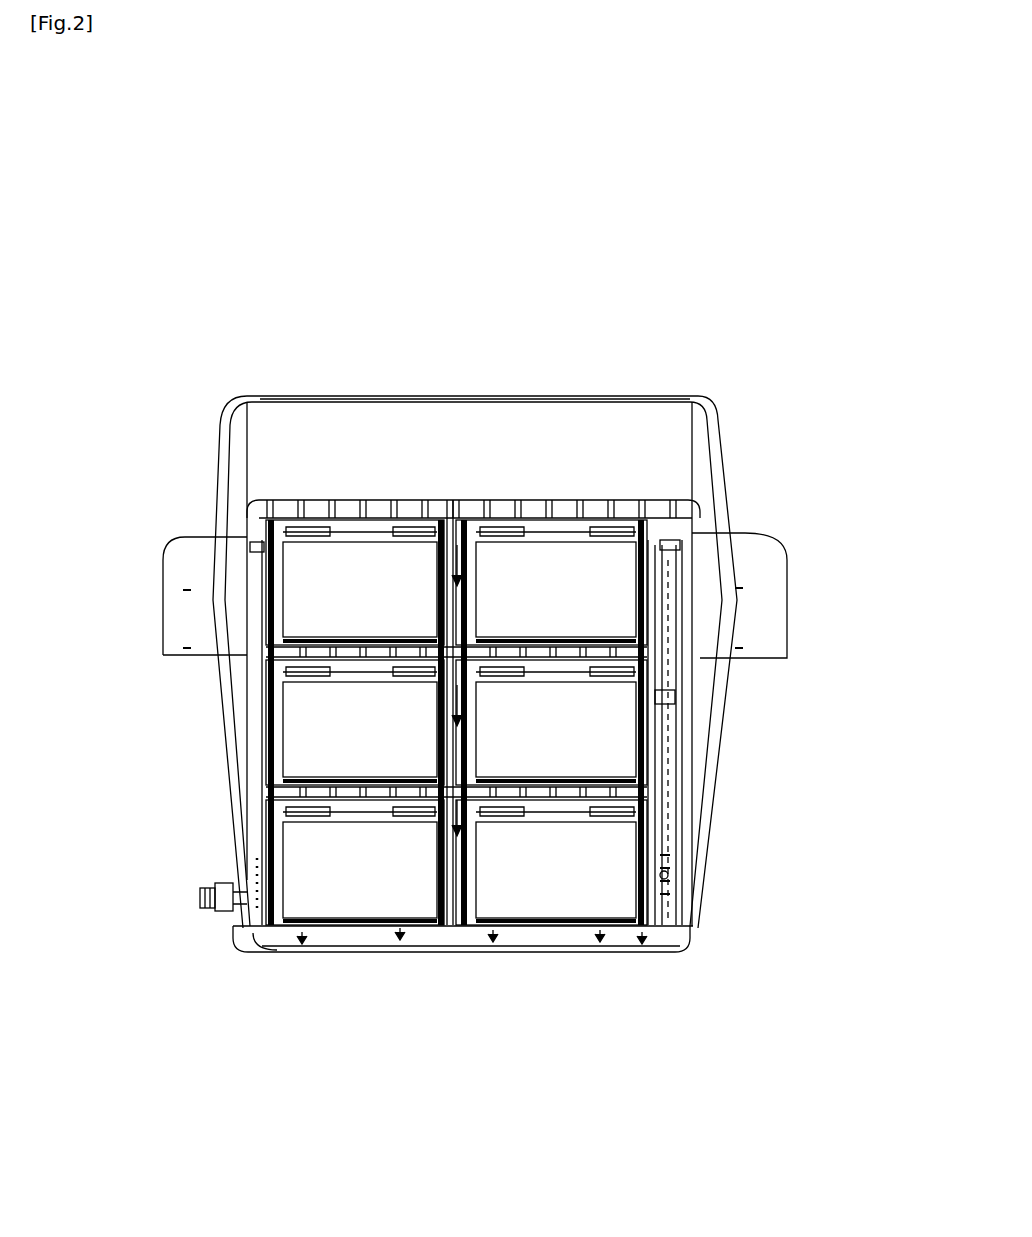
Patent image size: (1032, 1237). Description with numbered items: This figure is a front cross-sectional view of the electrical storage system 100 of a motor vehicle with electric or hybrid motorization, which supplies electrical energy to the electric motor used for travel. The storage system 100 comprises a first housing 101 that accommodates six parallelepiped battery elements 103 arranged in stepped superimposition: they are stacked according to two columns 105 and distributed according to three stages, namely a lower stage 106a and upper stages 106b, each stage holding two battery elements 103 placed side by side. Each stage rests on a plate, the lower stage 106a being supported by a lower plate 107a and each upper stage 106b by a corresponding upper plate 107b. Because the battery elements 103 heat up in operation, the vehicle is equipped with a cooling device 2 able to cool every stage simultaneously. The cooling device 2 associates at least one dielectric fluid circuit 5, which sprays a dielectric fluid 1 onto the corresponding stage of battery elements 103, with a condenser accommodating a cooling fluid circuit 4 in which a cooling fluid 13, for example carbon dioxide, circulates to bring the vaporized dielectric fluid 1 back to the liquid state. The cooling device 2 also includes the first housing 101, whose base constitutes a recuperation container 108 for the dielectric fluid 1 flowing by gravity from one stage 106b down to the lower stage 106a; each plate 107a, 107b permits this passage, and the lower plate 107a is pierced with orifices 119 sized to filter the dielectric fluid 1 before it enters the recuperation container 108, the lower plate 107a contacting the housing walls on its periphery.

The electrical storage system 100 is at (481, 270).
The first housing 101 is at (157, 460).
The column 105 is at (368, 438).
The cooling fluid circuit 4 is at (343, 505).
The cooling fluid 13 is at (435, 507).
The dielectric fluid circuit 5 is at (462, 548).
The cooling device 2 is at (668, 432).
The battery element 103 is at (341, 595).
The upper stage 106b is at (688, 583).
The upper plate 107b is at (670, 627).
The lower stage 106a is at (680, 870).
The lower plate 107a is at (676, 921).
The dielectric fluid 1 is at (677, 650).
The recuperation container 108 is at (467, 952).
The orifice 119 is at (253, 905).